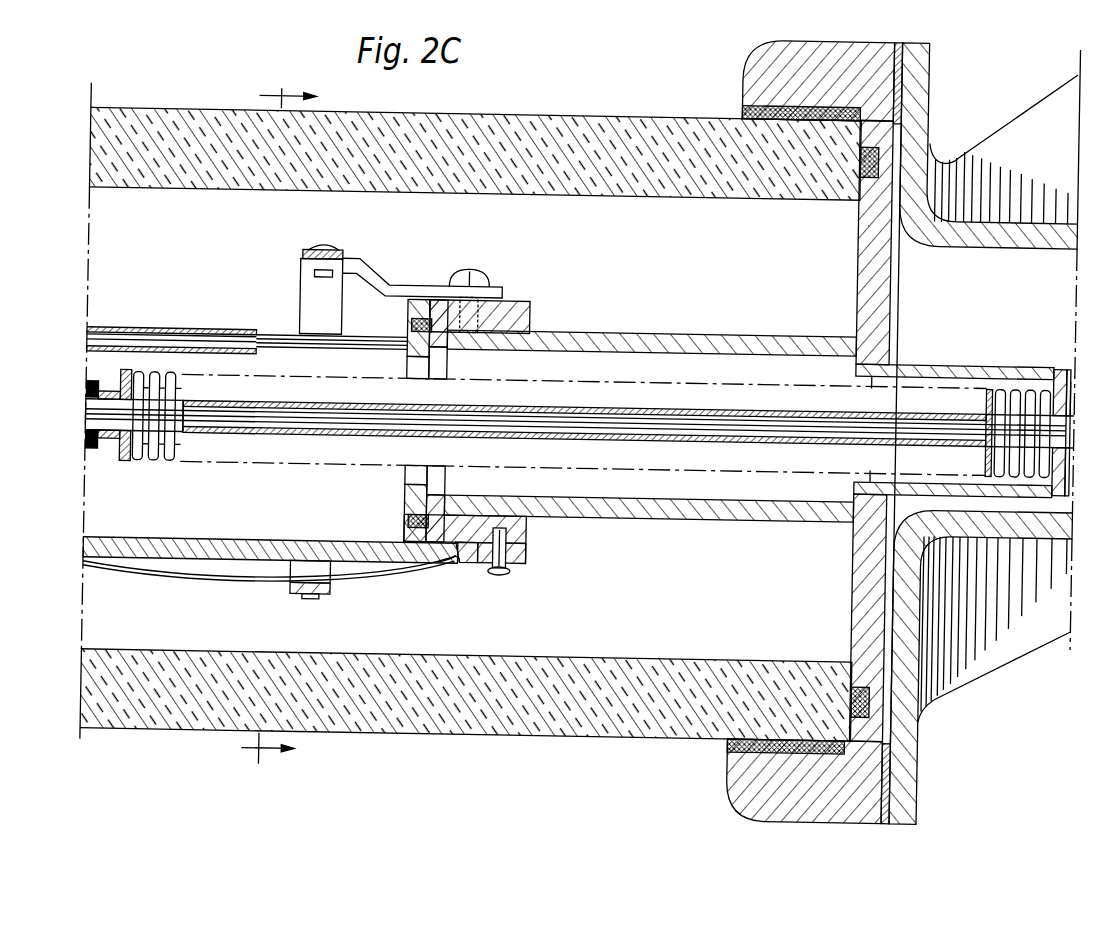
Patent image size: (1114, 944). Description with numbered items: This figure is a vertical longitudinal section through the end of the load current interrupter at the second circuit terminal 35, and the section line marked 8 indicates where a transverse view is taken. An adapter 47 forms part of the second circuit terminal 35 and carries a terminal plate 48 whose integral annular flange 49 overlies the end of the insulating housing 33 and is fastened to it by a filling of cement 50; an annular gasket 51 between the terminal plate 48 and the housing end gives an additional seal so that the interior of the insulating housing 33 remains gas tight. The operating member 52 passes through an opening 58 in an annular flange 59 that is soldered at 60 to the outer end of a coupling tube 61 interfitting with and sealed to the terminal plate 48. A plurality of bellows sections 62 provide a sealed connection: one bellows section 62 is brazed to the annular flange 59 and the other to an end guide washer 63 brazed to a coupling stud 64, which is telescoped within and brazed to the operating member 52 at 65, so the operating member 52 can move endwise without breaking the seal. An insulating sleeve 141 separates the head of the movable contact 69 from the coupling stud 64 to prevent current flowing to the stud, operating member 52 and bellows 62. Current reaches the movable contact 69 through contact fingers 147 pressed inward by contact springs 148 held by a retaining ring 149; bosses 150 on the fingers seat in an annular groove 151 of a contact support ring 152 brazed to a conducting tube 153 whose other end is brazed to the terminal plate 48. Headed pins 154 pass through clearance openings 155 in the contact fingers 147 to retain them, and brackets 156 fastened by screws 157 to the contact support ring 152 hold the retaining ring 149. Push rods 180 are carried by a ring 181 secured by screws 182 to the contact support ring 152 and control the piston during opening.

The section line 8- 8 is at (279, 425).
The insulating housing 33 is at (452, 114).
The second circuit terminal 35 is at (989, 77).
The adapter 47 is at (1023, 668).
The terminal plate 48 is at (866, 291).
The clamping ring 49 is at (759, 63).
The cement 50 is at (777, 121).
The annular gasket 51 is at (875, 166).
The operating member 52 is at (927, 408).
The opening 58 is at (1072, 405).
The annular flange 59 is at (1070, 367).
The solder joint 60 is at (1061, 364).
The coupling tube 61 is at (907, 361).
The bellows sections 62 is at (152, 379).
The end guide washer 63 is at (122, 379).
The coupling stud 64 is at (107, 440).
The telescoped joint 65 is at (207, 437).
The movable contact 69 is at (598, 269).
The insulating sleeve 141 is at (87, 395).
The contact fingers 147 is at (155, 556).
The contact springs 148 is at (245, 590).
The retaining ring 149 is at (327, 602).
The bosses 150 is at (479, 564).
The annular groove 151 is at (459, 558).
The contact support ring 152 is at (526, 308).
The conducting tube 153 is at (648, 336).
The headed pins 154 is at (510, 574).
The clearance openings 155 is at (528, 557).
The brackets 156 is at (362, 275).
The screws 157 is at (455, 270).
The push rods 180 is at (275, 339).
The ring 181 is at (406, 332).
The screws 182 is at (406, 312).